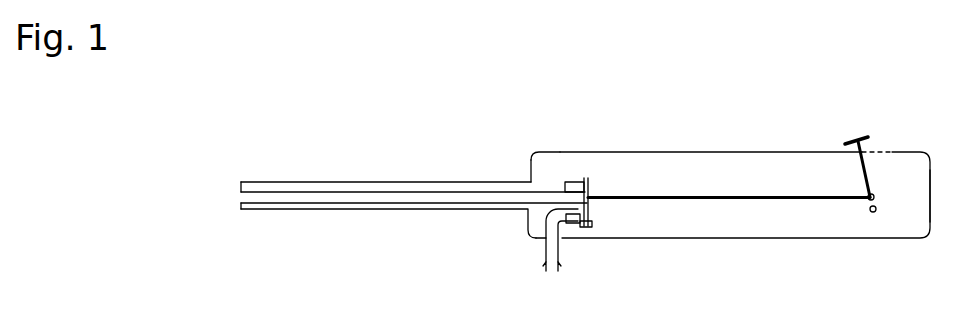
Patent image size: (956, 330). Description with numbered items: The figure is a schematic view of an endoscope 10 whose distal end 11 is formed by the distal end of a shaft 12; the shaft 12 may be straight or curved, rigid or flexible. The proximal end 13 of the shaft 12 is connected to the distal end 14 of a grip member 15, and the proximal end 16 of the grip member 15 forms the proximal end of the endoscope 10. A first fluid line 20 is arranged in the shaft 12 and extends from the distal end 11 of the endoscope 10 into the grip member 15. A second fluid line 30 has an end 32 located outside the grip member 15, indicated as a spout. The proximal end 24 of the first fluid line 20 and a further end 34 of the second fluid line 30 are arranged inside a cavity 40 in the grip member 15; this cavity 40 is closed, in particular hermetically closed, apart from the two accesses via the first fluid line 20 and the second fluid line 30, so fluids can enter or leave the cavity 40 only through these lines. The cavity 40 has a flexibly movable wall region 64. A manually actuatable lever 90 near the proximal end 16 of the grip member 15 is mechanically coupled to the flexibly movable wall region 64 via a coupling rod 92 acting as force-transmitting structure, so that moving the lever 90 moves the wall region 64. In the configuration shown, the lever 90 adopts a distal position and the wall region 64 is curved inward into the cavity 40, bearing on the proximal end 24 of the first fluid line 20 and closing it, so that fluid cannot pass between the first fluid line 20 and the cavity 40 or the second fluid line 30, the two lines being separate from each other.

The endoscope 10 is at (390, 73).
The distal end 11 is at (245, 180).
The shaft 12 is at (365, 181).
The proximal end 13 is at (522, 180).
The distal end 14 is at (533, 157).
The grip member 15 is at (745, 152).
The proximal end 16 is at (919, 152).
The first fluid line 20 is at (308, 210).
The proximal end 24 is at (585, 181).
The second fluid line 30 is at (545, 251).
The end 32 is at (550, 274).
The further end 34 is at (574, 226).
The cavity 40 is at (586, 229).
The flexibly movable wall region 64 is at (589, 192).
The lever 90 is at (858, 138).
The coupling rod 92 is at (791, 196).